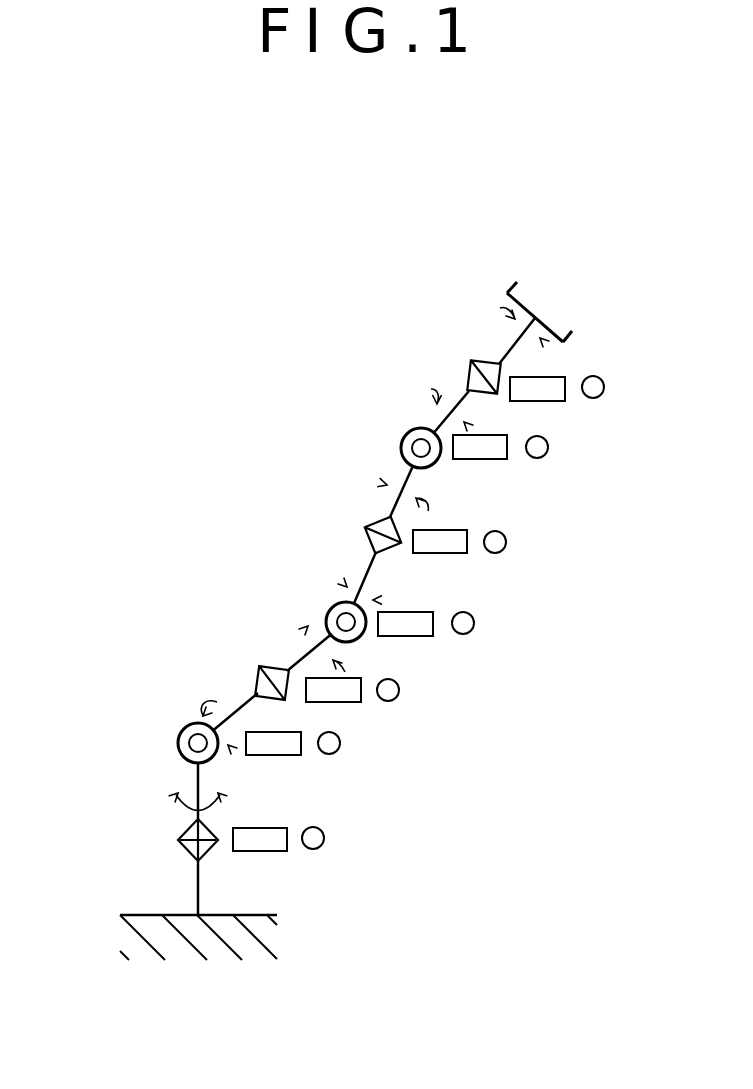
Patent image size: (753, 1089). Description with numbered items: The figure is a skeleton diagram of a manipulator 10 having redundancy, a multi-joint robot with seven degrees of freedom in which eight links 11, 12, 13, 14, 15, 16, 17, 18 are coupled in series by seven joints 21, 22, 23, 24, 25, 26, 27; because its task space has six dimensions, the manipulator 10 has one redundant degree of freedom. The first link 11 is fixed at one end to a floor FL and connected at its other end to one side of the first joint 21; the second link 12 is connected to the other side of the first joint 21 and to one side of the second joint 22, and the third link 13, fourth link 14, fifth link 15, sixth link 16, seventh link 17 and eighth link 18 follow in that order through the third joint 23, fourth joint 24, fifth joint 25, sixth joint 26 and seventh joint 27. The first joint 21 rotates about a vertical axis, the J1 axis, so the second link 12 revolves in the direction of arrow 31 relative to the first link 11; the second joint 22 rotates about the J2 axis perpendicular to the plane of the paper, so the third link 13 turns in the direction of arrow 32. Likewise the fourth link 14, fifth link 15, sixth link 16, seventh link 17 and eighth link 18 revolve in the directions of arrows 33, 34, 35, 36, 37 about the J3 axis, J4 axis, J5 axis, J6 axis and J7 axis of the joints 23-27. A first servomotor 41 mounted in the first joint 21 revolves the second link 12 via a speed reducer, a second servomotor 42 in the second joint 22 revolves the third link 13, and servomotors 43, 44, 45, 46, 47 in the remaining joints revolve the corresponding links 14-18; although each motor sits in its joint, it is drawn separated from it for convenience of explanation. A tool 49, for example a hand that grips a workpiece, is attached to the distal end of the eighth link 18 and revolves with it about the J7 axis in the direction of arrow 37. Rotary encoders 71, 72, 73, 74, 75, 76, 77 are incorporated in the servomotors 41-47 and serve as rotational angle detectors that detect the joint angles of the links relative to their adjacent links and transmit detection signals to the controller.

The manipulator 10 is at (154, 401).
The floor FL is at (120, 915).
The first link 11 is at (198, 880).
The second link 12 is at (198, 782).
The third link 13 is at (240, 704).
The fourth link 14 is at (318, 646).
The fifth link 15 is at (382, 604).
The sixth link 16 is at (402, 488).
The seventh link 17 is at (450, 413).
The eighth link 18 is at (510, 336).
The first joint 21 is at (180, 838).
The second joint 22 is at (198, 723).
The third joint 23 is at (260, 670).
The fourth joint 24 is at (340, 605).
The fifth joint 25 is at (382, 515).
The sixth joint 26 is at (408, 435).
The seventh joint 27 is at (470, 367).
The J1 axis J1 is at (190, 842).
The J2 axis J2 is at (190, 744).
The J3 axis J3 is at (256, 683).
The J4 axis J4 is at (328, 622).
The J5 axis J5 is at (364, 537).
The J6 axis J6 is at (401, 448).
The J7 axis J7 is at (468, 377).
The arrow 31 is at (222, 800).
The arrow 32 is at (228, 745).
The arrow 33 is at (308, 626).
The arrow 34 is at (347, 587).
The arrow 35 is at (387, 485).
The arrow 36 is at (464, 422).
The arrow 37 is at (540, 338).
The first servomotor 41 is at (258, 851).
The second servomotor 42 is at (270, 755).
The servomotor 43 is at (335, 702).
The servomotor 44 is at (420, 636).
The servomotor 45 is at (440, 553).
The servomotor 46 is at (485, 459).
The servomotor 47 is at (530, 401).
The tool 49 is at (507, 295).
The rotary encoder 71 is at (323, 843).
The rotary encoder 72 is at (340, 748).
The rotary encoder 73 is at (399, 690).
The rotary encoder 74 is at (474, 622).
The rotary encoder 75 is at (506, 542).
The rotary encoder 76 is at (548, 447).
The rotary encoder 77 is at (604, 387).